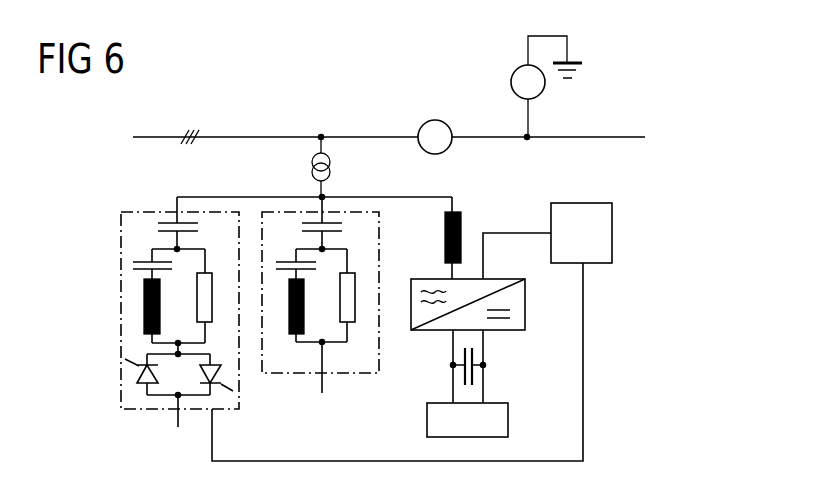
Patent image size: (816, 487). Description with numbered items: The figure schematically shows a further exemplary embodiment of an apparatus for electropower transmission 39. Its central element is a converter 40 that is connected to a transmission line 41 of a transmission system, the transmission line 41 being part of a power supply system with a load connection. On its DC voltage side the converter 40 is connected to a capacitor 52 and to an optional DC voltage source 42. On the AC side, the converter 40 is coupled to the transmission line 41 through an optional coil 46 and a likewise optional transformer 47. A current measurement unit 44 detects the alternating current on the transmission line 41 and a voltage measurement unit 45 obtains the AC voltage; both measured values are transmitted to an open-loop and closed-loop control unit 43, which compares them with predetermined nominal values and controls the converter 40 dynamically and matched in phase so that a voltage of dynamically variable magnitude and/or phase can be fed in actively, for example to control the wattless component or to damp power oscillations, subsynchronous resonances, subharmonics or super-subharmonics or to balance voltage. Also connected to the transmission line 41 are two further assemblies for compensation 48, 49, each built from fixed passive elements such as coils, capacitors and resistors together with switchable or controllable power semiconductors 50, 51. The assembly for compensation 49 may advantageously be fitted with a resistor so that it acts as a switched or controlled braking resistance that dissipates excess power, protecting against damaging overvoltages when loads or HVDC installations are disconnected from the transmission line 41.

The apparatus for electropower transmission 39 is at (143, 172).
The converter 40 is at (430, 279).
The transmission line 41 is at (334, 137).
The DC voltage source 42 is at (510, 418).
The open-loop and closed-loop control unit 43 is at (614, 235).
The current measurement unit 44 is at (428, 151).
The voltage measurement unit 45 is at (542, 88).
The coil 46 is at (458, 222).
The transformer 47 is at (311, 165).
The assembly for compensation 48 is at (345, 375).
The assembly for compensation 49 is at (177, 335).
The power semiconductor 50 is at (216, 375).
The power semiconductor 51 is at (137, 381).
The capacitor 52 is at (476, 356).